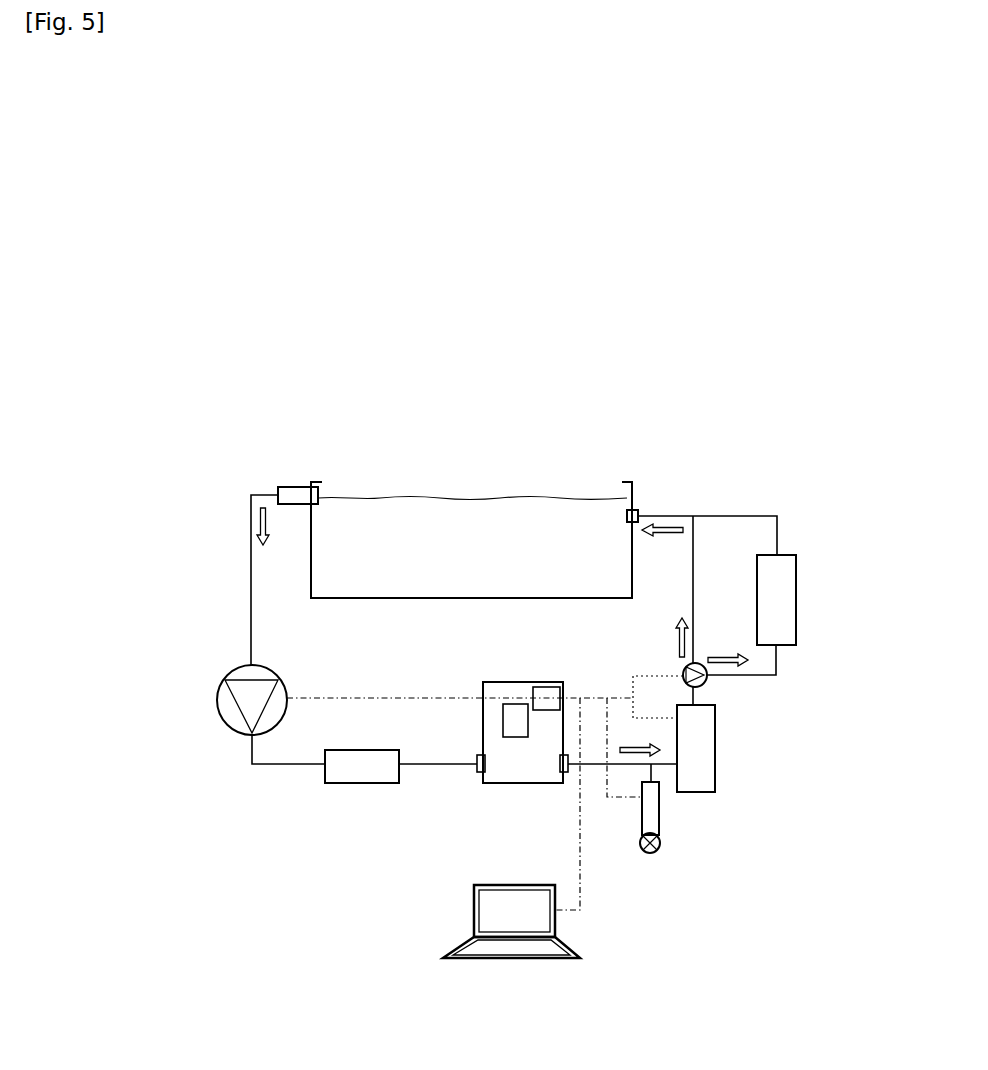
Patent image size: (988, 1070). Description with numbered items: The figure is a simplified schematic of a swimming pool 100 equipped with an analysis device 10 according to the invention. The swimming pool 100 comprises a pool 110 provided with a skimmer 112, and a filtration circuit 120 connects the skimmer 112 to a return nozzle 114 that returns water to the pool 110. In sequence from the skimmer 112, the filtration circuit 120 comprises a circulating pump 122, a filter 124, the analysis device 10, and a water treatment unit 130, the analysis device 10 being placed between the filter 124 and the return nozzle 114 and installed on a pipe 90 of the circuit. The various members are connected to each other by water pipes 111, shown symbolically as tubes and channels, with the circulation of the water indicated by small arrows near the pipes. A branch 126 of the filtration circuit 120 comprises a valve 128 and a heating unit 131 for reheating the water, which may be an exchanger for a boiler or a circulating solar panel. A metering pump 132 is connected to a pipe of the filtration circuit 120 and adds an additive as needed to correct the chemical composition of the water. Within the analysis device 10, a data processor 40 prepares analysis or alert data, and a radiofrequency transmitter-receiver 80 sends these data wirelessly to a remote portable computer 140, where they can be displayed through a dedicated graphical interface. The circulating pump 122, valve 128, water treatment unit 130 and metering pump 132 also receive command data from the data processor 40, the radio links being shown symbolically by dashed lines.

The swimming pool 100 is at (508, 462).
The pool 110 is at (437, 517).
The skimmer 112 is at (295, 487).
The return nozzle 114 is at (636, 510).
The filtration circuit 120 is at (270, 627).
The circulating pump 122 is at (240, 737).
The filter 124 is at (395, 783).
The pipe 90 is at (440, 764).
The analysis device 10 is at (500, 795).
The data processor 40 is at (518, 707).
The radiofrequency transmitter-receiver 80 is at (548, 695).
The water pipes 111 is at (775, 528).
The heating unit 131 is at (788, 565).
The branch 126 is at (771, 665).
The valve 128 is at (705, 683).
The water treatment unit 130 is at (715, 762).
The metering pump 132 is at (660, 830).
The remote portable computer 140 is at (474, 900).